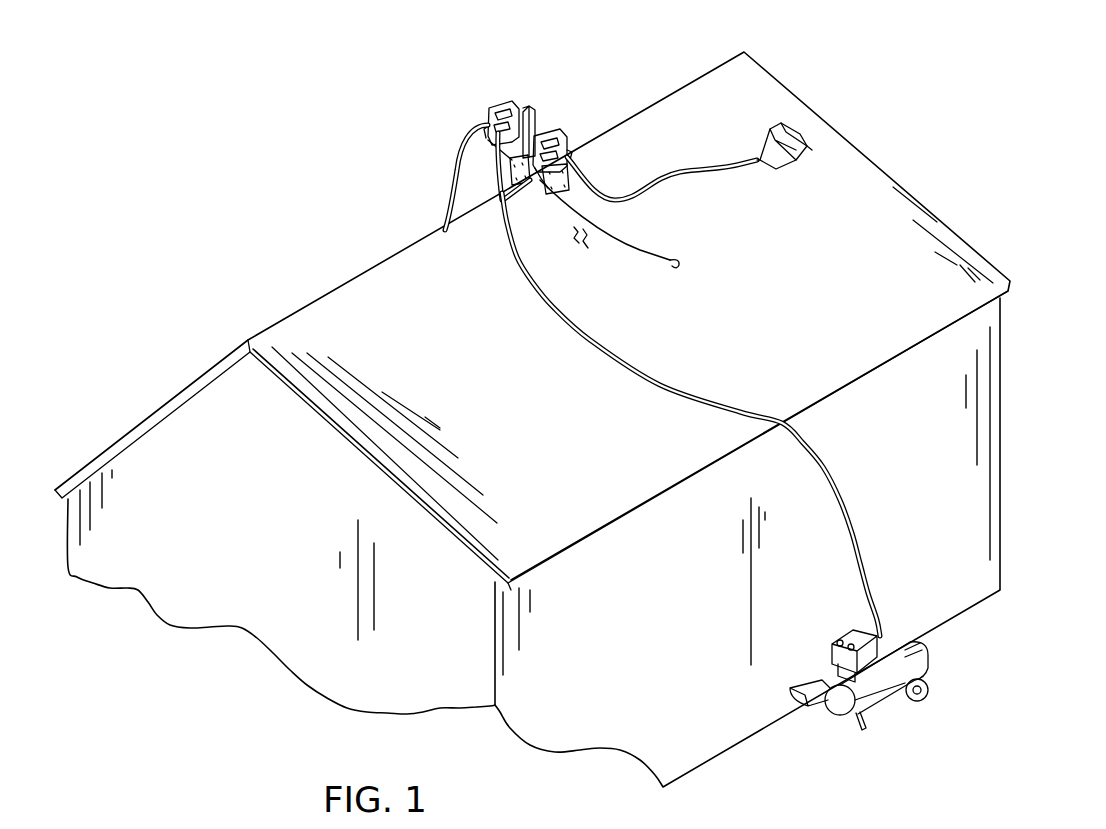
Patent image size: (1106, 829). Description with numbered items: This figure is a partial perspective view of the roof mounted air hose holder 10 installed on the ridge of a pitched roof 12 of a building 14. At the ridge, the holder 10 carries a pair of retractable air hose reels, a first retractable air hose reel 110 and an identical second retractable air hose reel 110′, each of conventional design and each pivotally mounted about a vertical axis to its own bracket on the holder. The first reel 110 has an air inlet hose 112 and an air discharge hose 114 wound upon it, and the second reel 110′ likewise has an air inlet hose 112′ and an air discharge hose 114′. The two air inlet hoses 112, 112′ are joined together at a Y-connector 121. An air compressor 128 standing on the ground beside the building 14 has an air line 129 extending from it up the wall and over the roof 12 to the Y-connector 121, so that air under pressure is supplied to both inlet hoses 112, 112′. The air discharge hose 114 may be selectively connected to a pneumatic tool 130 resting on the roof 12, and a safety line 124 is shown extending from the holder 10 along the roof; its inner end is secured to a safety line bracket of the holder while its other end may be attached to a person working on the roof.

The roof mounted air hose holder 10 is at (525, 163).
The pitched roof 12 is at (865, 258).
The building 14 is at (980, 500).
The retractable air hose reel 110 is at (567, 130).
The retractable air hose reel 110′ is at (494, 100).
The air inlet hose 112 is at (548, 200).
The air inlet hose 112′ is at (497, 160).
The air discharge hose 114 is at (615, 197).
The air discharge hose 114′ is at (452, 212).
The Y-connector 121 is at (540, 172).
The safety line 124 is at (628, 248).
The air compressor 128 is at (923, 660).
The air line 129 is at (848, 537).
The pneumatic tool 130 is at (763, 140).